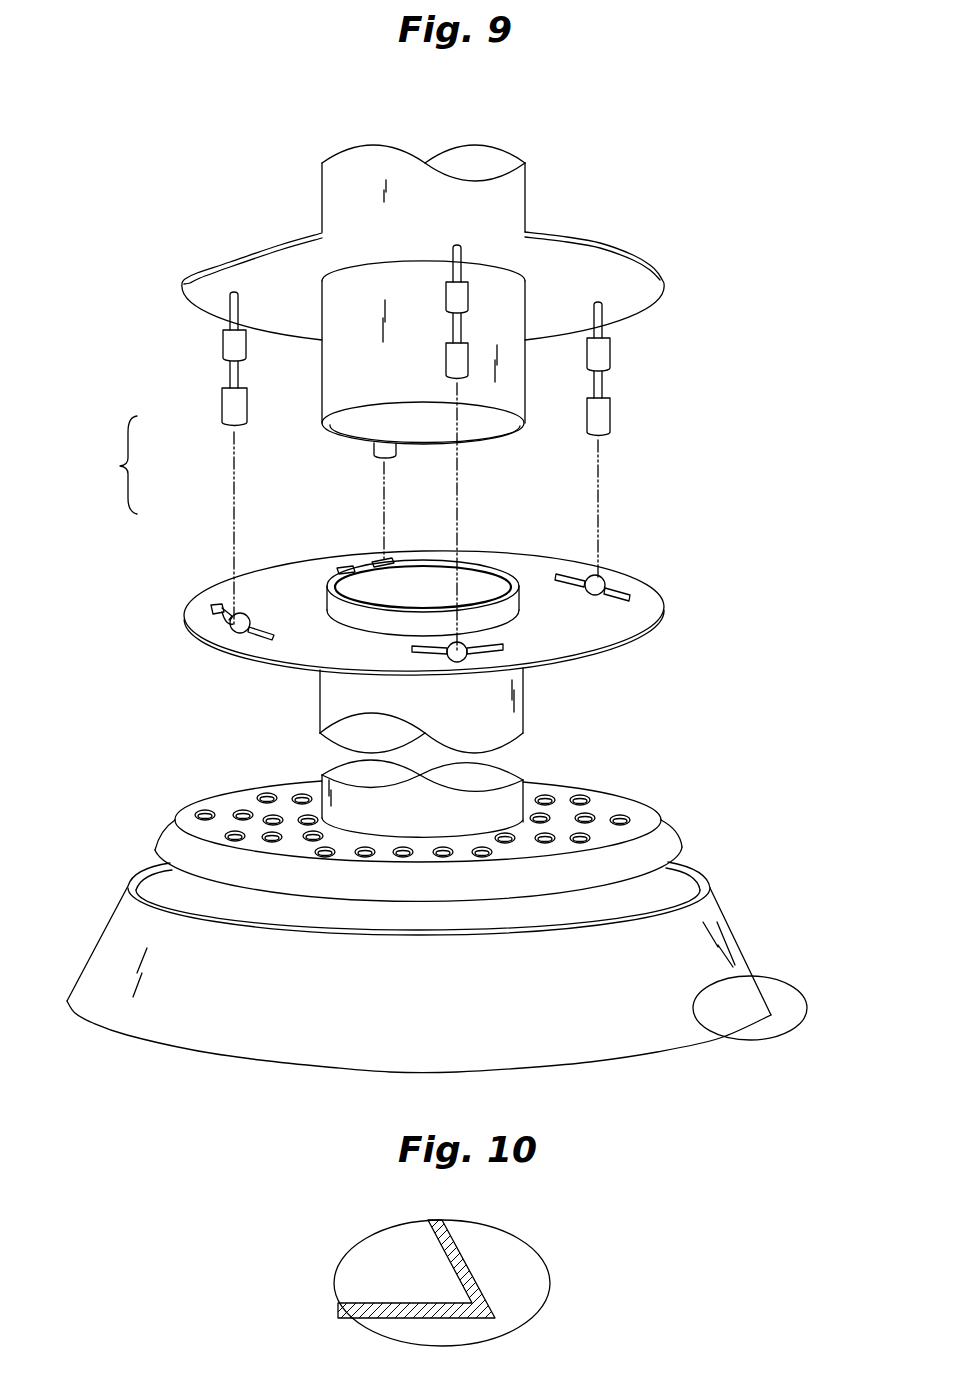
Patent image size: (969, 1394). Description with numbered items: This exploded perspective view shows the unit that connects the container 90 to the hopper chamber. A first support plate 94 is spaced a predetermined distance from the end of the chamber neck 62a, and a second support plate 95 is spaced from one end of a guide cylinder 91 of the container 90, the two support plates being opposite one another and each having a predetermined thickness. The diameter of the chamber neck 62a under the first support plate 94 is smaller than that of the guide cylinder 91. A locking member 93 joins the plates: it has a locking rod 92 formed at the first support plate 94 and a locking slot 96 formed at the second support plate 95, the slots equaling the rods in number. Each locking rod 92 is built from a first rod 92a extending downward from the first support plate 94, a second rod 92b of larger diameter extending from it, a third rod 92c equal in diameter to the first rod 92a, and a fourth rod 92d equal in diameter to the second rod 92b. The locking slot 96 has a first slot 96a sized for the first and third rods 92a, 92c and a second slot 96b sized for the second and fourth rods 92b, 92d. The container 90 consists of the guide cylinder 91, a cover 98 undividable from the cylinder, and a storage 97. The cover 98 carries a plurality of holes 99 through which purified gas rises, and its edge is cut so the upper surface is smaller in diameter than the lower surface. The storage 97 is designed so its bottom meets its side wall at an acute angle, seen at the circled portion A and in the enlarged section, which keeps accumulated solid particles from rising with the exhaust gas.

The chamber neck 62a is at (511, 208).
The first support plate 94 is at (613, 268).
The locking rod 92 is at (212, 399).
The first rod 92a is at (602, 318).
The second rod 92b is at (604, 355).
The third rod 92c is at (604, 387).
The fourth rod 92d is at (604, 416).
The locking member 93 is at (161, 521).
The second support plate 95 is at (643, 600).
The locking slot 96 is at (195, 600).
The first slot 96a is at (212, 608).
The second slot 96b is at (237, 633).
The guide cylinder 91 is at (328, 693).
The container 90 is at (451, 901).
The cover 98 is at (418, 815).
The holes 99 is at (581, 794).
The storage 97 is at (725, 903).
The circled portion A is at (782, 1002).